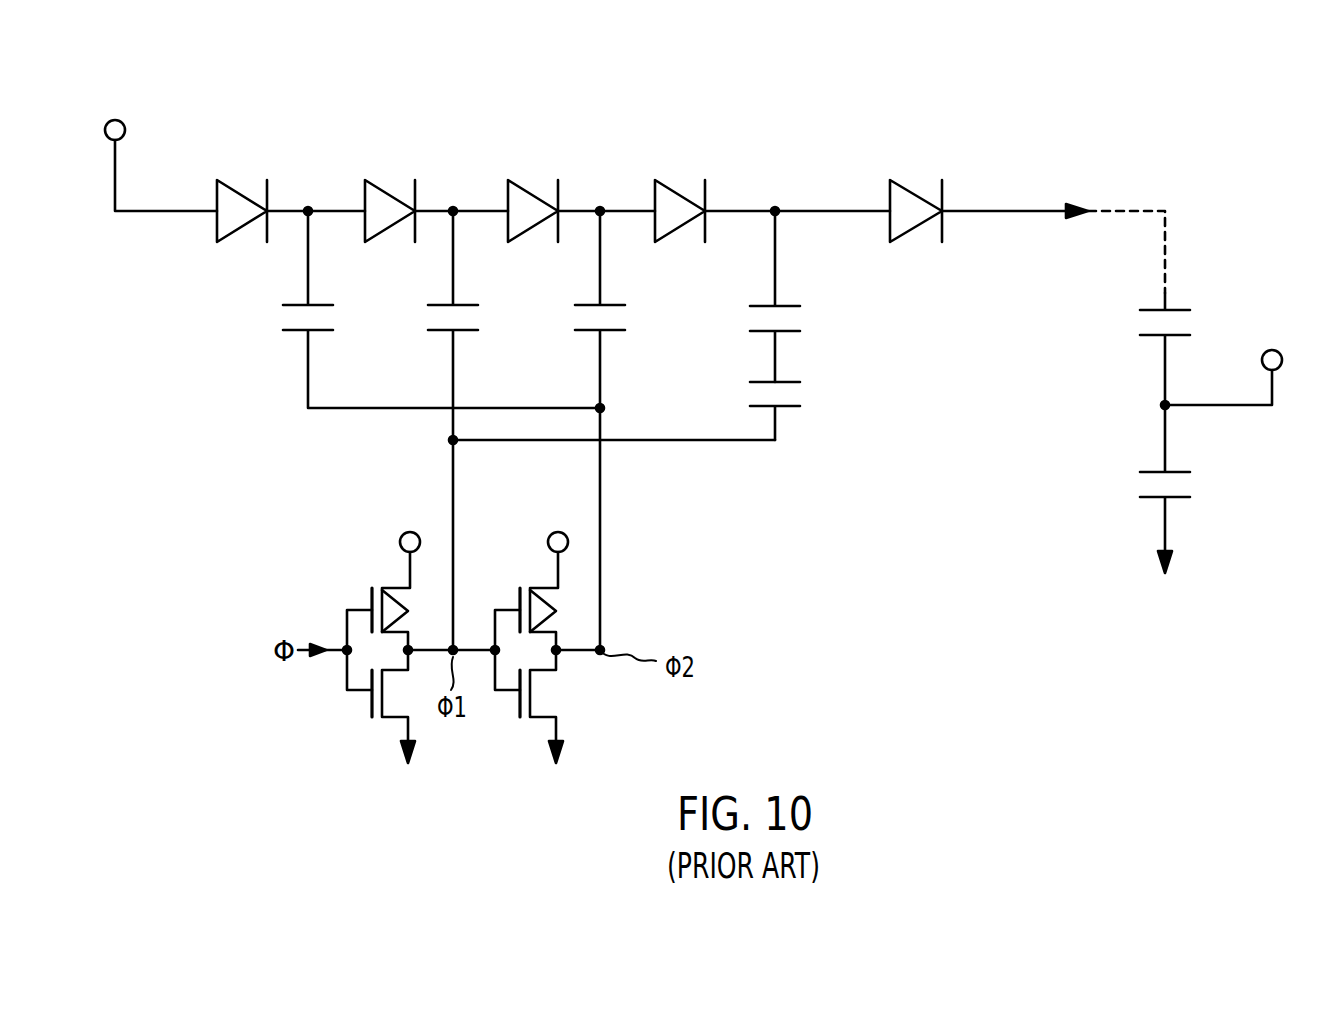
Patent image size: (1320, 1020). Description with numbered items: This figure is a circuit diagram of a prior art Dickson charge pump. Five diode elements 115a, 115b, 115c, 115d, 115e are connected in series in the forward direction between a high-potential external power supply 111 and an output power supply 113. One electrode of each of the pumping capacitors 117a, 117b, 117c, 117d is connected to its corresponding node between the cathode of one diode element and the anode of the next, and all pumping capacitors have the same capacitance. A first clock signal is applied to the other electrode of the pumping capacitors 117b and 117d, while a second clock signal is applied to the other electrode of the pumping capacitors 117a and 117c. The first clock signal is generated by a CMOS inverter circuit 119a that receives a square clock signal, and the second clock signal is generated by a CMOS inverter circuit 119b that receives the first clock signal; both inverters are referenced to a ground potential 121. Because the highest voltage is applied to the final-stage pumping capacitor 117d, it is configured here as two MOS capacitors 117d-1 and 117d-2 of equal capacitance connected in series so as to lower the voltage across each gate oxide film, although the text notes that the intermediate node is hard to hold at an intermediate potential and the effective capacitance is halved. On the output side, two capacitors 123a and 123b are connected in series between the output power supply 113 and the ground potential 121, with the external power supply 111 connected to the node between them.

The high-potential power supply 111 is at (115, 118).
The output power supply 113 is at (1082, 205).
The diode element 115a is at (240, 183).
The diode element 115b is at (388, 183).
The diode element 115c is at (534, 183).
The diode element 115d is at (680, 183).
The diode element 115e is at (914, 188).
The pumping capacitor 117a is at (330, 335).
The pumping capacitor 117b is at (475, 335).
The pumping capacitor 117c is at (622, 335).
The final-stage pumping capacitor 117d is at (869, 325).
The MOS capacitor 117d-1 is at (802, 318).
The MOS capacitor 117d-2 is at (802, 397).
The CMOS inverter circuit 119a is at (390, 652).
The CMOS inverter circuit 119b is at (538, 652).
The ground potential 121 is at (1160, 582).
The capacitor 123a is at (1132, 320).
The capacitor 123b is at (1132, 486).